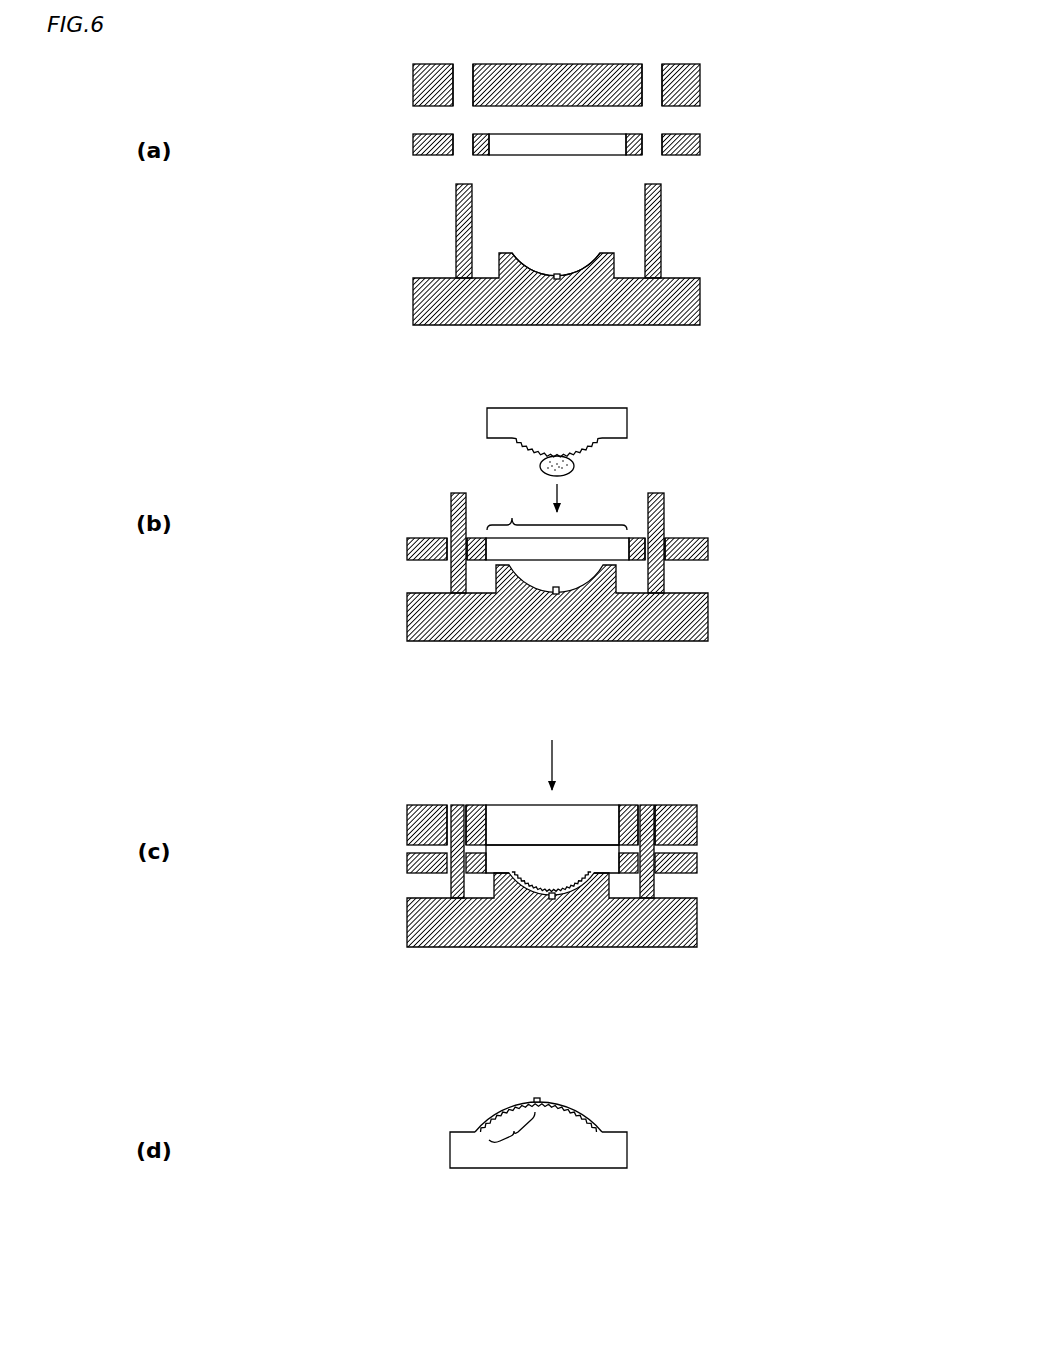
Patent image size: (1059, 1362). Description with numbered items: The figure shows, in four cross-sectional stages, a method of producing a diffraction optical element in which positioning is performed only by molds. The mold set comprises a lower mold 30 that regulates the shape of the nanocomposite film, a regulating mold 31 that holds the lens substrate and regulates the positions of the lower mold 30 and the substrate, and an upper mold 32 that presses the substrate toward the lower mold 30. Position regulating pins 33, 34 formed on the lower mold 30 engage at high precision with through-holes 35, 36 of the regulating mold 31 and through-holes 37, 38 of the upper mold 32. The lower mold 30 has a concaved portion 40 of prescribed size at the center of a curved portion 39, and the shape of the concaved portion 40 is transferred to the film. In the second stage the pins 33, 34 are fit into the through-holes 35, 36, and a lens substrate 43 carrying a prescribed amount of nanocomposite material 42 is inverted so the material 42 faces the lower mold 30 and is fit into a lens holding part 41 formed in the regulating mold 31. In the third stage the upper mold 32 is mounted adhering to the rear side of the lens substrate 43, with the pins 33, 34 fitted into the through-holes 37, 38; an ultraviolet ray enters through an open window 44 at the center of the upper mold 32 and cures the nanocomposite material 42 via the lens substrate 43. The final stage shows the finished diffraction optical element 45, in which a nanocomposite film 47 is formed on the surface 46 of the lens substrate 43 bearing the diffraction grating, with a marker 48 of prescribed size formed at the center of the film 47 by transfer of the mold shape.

The lower mold 30 is at (428, 301).
The regulating mold 31 is at (428, 146).
The upper mold 32 is at (428, 88).
The position regulating pin 33 is at (463, 214).
The position regulating pin 34 is at (653, 214).
The through-hole 35 is at (463, 145).
The through-hole 36 is at (652, 145).
The through-hole 37 is at (463, 74).
The through-hole 38 is at (652, 74).
The curved portion 39 is at (519, 256).
The concaved portion 40 is at (558, 269).
The lens holding part 41 is at (557, 510).
The nanocomposite material 42 is at (575, 466).
The lens substrate 43 is at (505, 423).
The open window 44 is at (595, 813).
The diffraction optical element 45 is at (608, 1150).
The surface 46 is at (516, 1137).
The nanocomposite film 47 is at (570, 1112).
The marker 48 is at (537, 1096).